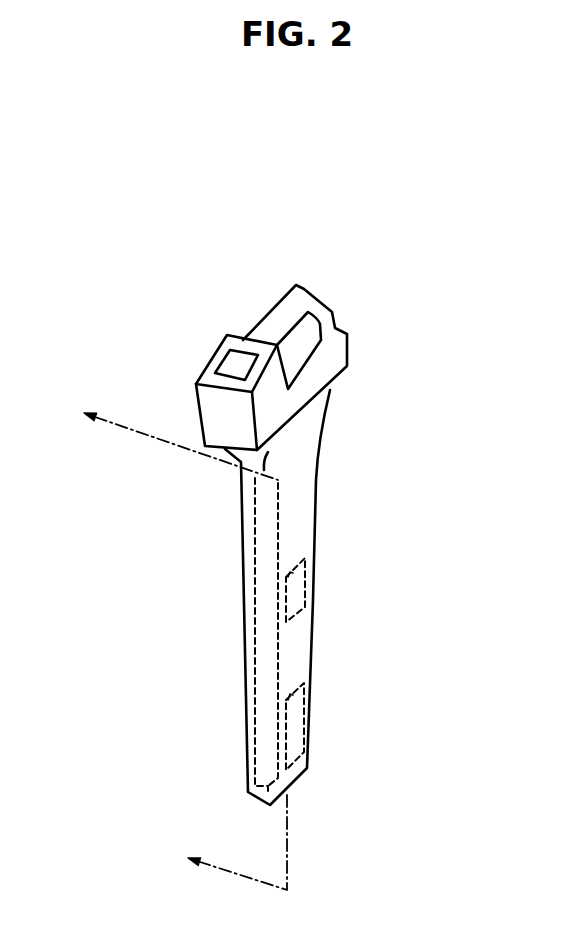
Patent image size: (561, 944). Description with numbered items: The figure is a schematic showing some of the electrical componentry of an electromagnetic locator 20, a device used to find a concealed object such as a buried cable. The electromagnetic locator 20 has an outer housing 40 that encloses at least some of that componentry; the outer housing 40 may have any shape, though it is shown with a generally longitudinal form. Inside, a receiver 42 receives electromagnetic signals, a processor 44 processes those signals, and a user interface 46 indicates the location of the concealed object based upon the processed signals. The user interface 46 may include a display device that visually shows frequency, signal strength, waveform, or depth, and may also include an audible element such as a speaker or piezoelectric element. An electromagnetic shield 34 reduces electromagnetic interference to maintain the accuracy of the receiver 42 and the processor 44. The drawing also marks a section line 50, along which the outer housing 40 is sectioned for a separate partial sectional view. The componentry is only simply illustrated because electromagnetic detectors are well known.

The electromagnetic locator 20 is at (275, 587).
The electromagnetic shield 34 is at (255, 618).
The outer housing 40 is at (312, 747).
The receiver 42 is at (305, 720).
The processor 44 is at (313, 587).
The user interface 46 is at (233, 365).
The line L3-L3 50 is at (123, 425).